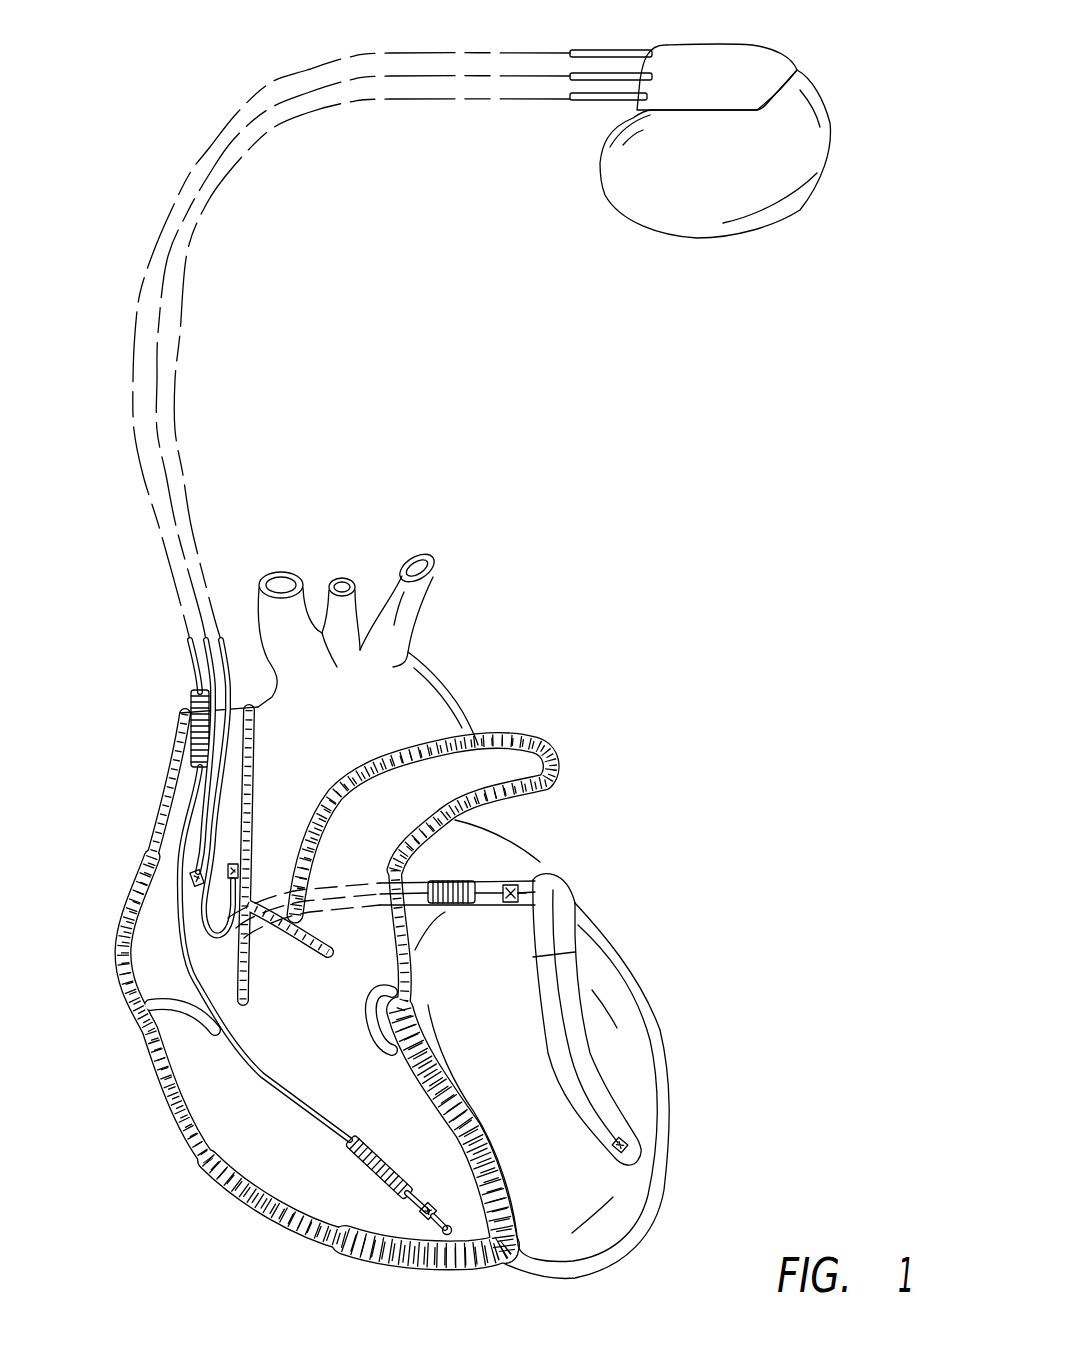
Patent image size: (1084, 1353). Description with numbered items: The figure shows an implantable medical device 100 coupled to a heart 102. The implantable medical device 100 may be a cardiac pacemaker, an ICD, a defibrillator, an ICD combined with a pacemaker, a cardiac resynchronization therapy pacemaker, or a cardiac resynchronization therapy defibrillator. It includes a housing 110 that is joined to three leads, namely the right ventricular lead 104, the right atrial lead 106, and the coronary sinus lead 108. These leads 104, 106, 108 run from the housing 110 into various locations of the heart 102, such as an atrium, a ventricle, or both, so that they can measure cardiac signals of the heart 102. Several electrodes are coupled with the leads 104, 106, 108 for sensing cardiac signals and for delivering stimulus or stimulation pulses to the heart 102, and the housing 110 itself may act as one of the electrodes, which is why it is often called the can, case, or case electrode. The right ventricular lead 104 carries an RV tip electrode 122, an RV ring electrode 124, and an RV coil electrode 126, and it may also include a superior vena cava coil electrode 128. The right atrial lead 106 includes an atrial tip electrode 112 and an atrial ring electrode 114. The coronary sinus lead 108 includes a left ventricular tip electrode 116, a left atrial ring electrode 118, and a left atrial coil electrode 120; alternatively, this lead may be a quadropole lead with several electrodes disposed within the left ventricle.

The implantable medical device 100 is at (783, 44).
The heart 102 is at (396, 914).
The right ventricular lead 104 is at (543, 53).
The right atrial lead 106 is at (413, 77).
The coronary sinus lead 108 is at (363, 100).
The housing 110 is at (820, 160).
The atrial tip electrode 112 is at (238, 868).
The atrial ring electrode 114 is at (191, 878).
The left ventricular tip electrode 116 is at (628, 1147).
The left atrial ring electrode 118 is at (511, 883).
The left atrial coil electrode 120 is at (467, 878).
The right ventricular tip electrode 122 is at (445, 1235).
The right ventricular ring electrode 124 is at (425, 1215).
The right ventricular coil electrode 126 is at (350, 1147).
The superior vena cava coil electrode 128 is at (188, 703).